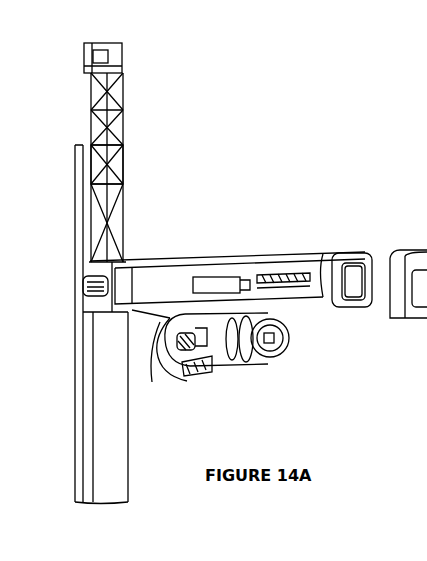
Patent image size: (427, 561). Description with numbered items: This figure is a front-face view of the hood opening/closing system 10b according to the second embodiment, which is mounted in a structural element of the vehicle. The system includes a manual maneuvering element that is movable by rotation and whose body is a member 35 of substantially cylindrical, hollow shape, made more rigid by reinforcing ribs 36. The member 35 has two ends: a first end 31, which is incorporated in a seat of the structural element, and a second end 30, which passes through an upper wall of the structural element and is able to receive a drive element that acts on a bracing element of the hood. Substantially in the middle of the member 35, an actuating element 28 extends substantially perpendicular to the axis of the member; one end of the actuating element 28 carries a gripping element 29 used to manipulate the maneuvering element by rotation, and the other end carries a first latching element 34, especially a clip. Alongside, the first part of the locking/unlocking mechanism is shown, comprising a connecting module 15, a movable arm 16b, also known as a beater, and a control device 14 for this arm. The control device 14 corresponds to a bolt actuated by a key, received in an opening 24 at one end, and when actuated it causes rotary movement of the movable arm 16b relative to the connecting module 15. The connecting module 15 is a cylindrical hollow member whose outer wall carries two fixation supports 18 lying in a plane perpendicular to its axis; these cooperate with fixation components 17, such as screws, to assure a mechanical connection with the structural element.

The opening/closing system 10b is at (411, 106).
The control device 14 is at (292, 357).
The connecting module 15 is at (246, 357).
The movable arm 16b is at (190, 381).
The fixation component 17 is at (193, 342).
The fixation support 18 is at (165, 332).
The opening 24 is at (275, 337).
The actuating element 28 is at (241, 258).
The gripping element 29 is at (418, 308).
The second end 30 is at (119, 45).
The first end 31 is at (105, 498).
The first latching element 34 is at (84, 292).
The member 35 is at (100, 329).
The reinforcing ribs 36 is at (125, 171).